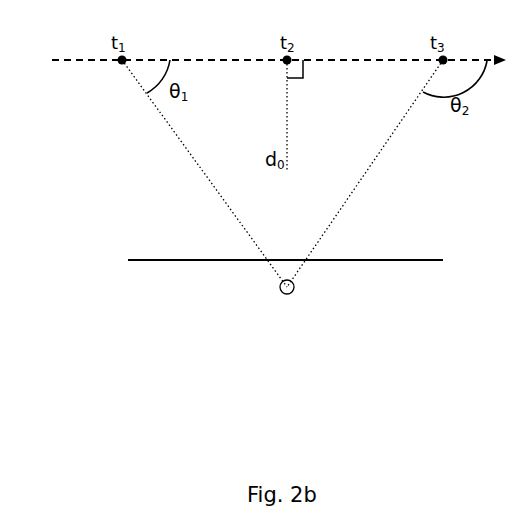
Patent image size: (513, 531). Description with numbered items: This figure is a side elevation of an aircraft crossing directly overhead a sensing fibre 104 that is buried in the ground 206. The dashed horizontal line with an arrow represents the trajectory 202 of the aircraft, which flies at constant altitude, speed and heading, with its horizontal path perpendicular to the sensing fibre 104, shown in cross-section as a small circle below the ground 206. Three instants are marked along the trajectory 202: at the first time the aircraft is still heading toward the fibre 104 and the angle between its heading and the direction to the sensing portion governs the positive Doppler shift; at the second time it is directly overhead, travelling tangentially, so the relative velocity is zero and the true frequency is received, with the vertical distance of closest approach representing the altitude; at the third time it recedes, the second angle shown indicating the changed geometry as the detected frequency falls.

The trajectory 202 is at (260, 59).
The ground 206 is at (410, 260).
The sensing fibre 104 is at (294, 290).